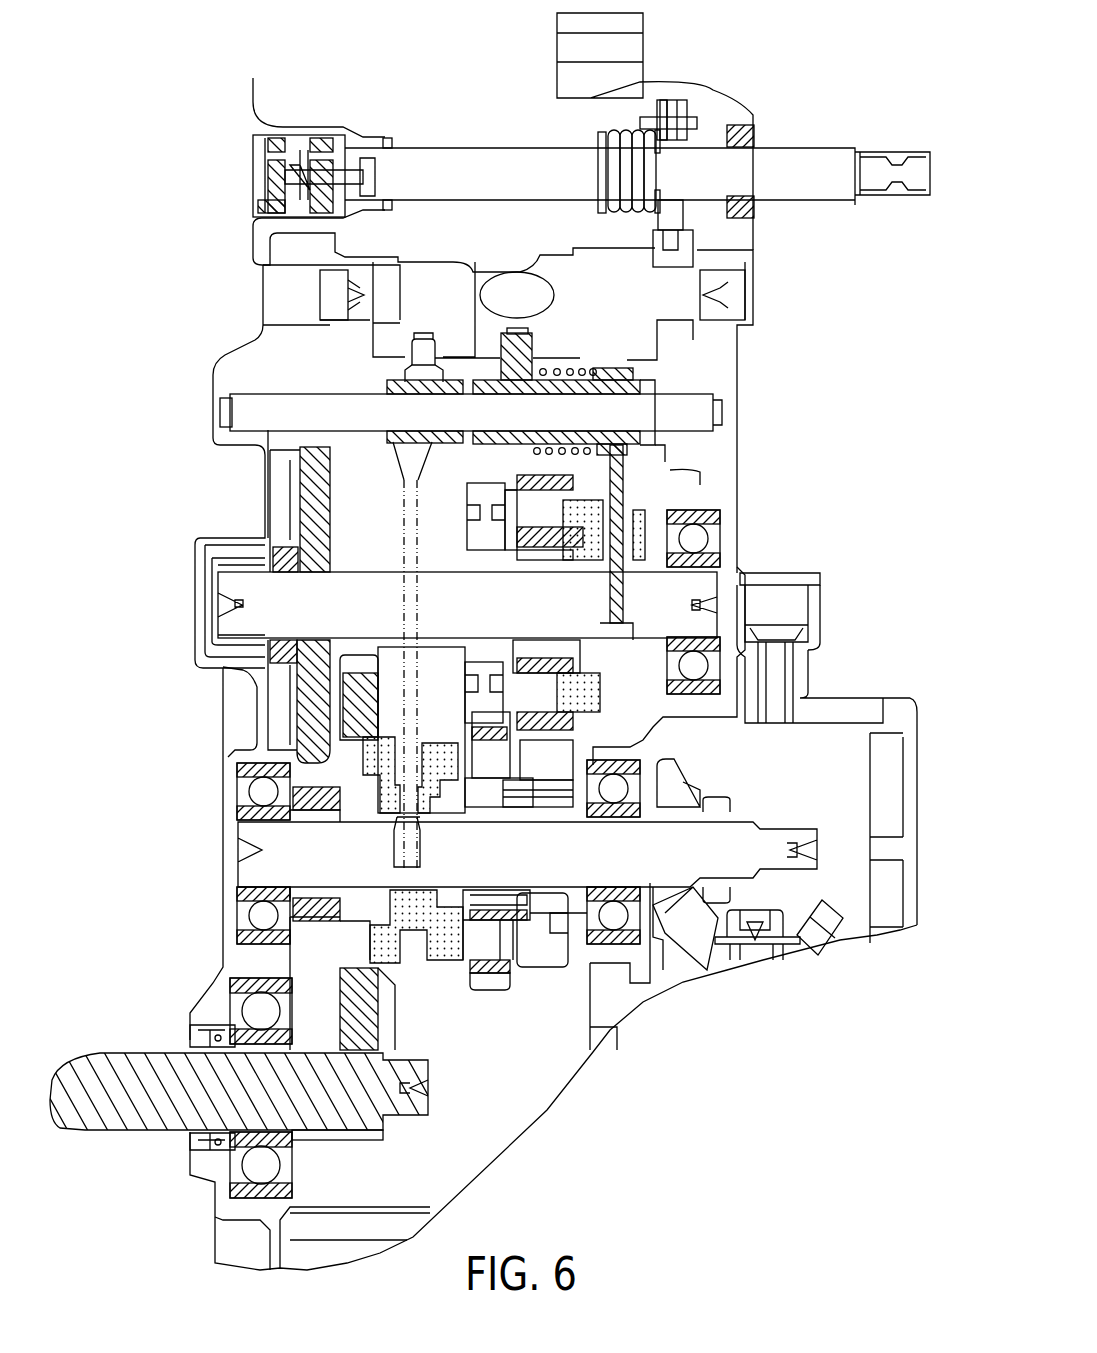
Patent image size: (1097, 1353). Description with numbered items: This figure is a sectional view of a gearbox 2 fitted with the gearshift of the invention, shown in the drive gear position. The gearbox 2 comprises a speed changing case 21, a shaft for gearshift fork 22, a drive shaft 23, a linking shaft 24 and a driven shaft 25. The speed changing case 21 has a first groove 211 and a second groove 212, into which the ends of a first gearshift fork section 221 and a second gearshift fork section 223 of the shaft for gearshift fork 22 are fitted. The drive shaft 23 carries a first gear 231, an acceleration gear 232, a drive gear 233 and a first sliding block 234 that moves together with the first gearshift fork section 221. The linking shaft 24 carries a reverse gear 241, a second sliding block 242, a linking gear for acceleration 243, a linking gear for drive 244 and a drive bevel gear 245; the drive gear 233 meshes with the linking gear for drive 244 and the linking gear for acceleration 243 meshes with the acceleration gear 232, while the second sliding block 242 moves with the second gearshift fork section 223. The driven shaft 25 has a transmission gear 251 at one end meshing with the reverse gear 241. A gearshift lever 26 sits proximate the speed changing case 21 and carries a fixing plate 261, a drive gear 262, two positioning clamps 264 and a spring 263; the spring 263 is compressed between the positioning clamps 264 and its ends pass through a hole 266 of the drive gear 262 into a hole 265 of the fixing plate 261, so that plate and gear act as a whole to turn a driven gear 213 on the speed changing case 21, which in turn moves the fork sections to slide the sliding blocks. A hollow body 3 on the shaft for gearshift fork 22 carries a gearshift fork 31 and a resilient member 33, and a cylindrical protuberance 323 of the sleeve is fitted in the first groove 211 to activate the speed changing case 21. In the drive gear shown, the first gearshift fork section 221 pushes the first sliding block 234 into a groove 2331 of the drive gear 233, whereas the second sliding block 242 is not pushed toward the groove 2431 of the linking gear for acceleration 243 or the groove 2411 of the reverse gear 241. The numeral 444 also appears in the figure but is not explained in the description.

The gearbox 2 is at (196, 743).
The speed changing case 21 is at (330, 278).
The first groove 211 is at (507, 332).
The second groove 212 is at (425, 333).
The driven gear 213 is at (775, 252).
The shaft for gearshift fork 22 is at (323, 410).
The first gearshift fork section 221 is at (660, 455).
The second gearshift fork section 223 is at (365, 377).
The drive shaft 23 is at (235, 590).
The first gear 231 is at (310, 515).
The acceleration gear 232 is at (475, 507).
The drive gear 233 is at (517, 470).
The groove 2331 is at (512, 550).
The first sliding block 234 is at (637, 530).
The linking shaft 24 is at (250, 877).
The reverse gear 241 is at (337, 690).
The groove 2411 is at (350, 953).
The second sliding block 242 is at (387, 967).
The linking gear for acceleration 243 is at (510, 967).
The groove 2431 is at (480, 950).
The linking gear for drive 244 is at (545, 950).
The drive bevel gear 245 is at (700, 772).
The driven shaft 25 is at (100, 1077).
The transmission gear 251 is at (343, 1137).
The gearshift lever 26 is at (850, 150).
The fixing plate 261 is at (683, 103).
The drive gear 262 is at (672, 230).
The spring 263 is at (597, 163).
The positioning clamps 264 is at (597, 135).
The hole 265 is at (692, 115).
The hole 266 is at (670, 102).
The hollow body 3 is at (662, 380).
The gearshift fork 31 is at (605, 618).
The resilient member 33 is at (592, 366).
The cylindrical protuberance 323 is at (540, 362).
The pin 444 is at (408, 366).